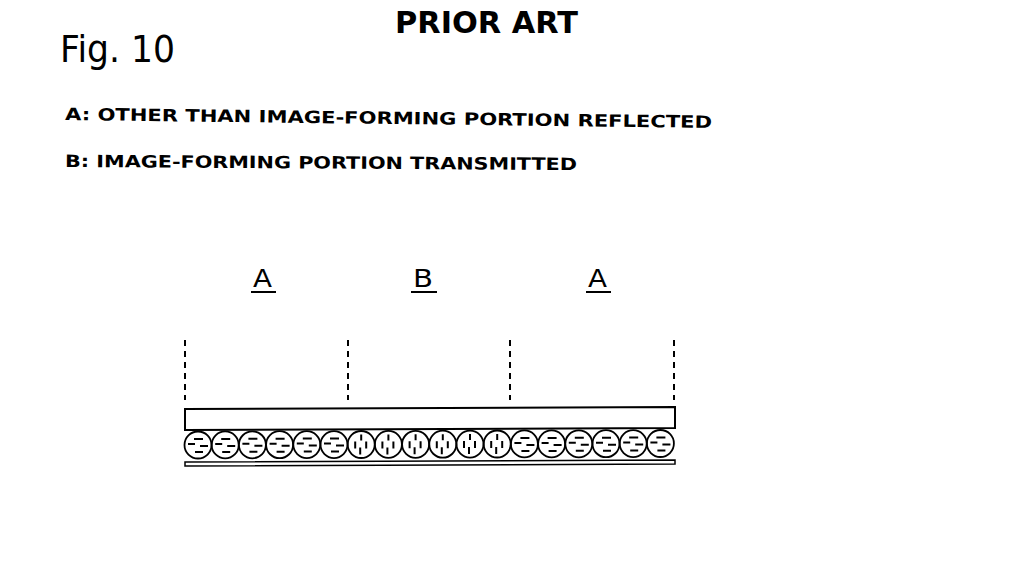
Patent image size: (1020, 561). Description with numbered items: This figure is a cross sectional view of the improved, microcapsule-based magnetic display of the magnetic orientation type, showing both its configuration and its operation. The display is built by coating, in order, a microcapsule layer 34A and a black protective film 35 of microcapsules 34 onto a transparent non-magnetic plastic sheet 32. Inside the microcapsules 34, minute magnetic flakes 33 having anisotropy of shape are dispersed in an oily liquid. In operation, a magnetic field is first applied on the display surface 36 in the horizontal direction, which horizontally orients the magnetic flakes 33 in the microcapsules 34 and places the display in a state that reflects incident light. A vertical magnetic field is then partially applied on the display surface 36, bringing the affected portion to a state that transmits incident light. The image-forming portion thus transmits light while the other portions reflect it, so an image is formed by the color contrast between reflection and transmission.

The transparent non-magnetic plastic sheet 32 is at (668, 418).
The magnetic flakes 33 is at (620, 507).
The microcapsules 34 is at (429, 488).
The microcapsule layer 34A is at (484, 483).
The black protective film 35 is at (675, 463).
The display surface 36 is at (495, 407).